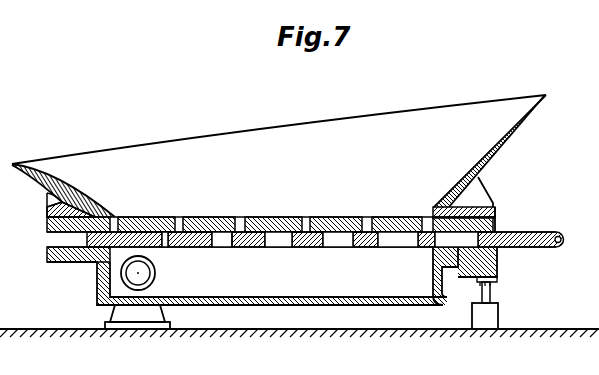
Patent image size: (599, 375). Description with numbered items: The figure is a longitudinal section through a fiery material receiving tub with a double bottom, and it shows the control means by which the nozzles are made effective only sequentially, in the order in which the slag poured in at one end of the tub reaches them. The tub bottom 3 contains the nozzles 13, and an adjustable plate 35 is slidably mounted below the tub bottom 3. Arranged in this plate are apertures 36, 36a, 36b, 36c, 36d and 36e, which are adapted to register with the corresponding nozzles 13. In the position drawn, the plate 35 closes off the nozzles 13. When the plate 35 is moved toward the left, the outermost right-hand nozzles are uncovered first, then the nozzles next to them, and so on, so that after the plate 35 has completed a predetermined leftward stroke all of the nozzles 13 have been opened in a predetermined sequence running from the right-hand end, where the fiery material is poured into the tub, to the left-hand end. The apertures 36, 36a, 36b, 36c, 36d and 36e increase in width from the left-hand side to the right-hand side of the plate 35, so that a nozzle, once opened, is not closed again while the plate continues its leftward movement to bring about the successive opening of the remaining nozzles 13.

The tub bottom 3 is at (281, 219).
The nozzles 13 is at (179, 217).
The adjustable plate 35 is at (258, 249).
The aperture 36 is at (166, 249).
The aperture 36a is at (222, 249).
The aperture 36b is at (283, 249).
The aperture 36c is at (343, 249).
The aperture 36d is at (405, 249).
The aperture 36e is at (460, 249).